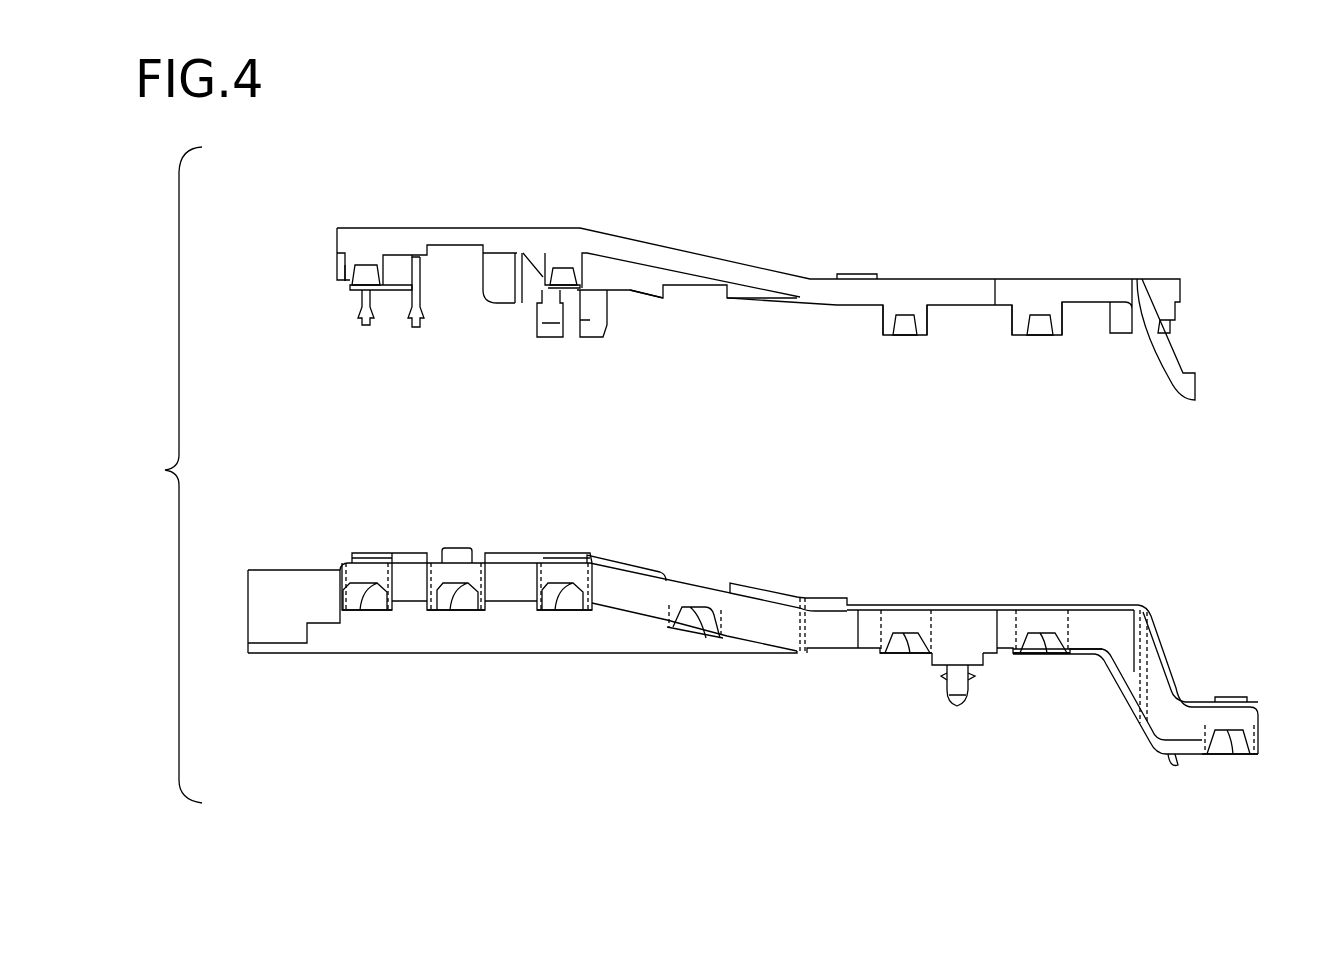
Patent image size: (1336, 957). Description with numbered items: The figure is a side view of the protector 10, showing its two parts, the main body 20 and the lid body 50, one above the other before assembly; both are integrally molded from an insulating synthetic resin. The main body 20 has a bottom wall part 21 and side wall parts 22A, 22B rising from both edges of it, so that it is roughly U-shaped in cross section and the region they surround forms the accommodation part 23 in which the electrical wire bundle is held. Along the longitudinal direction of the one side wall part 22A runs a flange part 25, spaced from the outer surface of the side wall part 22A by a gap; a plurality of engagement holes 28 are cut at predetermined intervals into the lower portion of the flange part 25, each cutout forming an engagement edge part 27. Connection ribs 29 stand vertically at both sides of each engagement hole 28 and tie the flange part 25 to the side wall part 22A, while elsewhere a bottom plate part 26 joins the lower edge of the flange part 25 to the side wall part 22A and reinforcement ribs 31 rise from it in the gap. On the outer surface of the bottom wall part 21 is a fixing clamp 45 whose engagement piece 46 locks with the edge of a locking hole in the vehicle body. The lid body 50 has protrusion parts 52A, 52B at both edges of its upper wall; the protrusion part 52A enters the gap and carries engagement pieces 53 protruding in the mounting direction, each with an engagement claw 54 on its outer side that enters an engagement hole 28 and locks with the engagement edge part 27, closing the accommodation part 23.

The protector 10 is at (1140, 195).
The main body 20 is at (773, 660).
The bottom wall part 21 is at (697, 657).
The side wall part 22A is at (595, 638).
The side wall part 22B is at (522, 552).
The accommodation part 23 is at (752, 608).
The flange part 25 is at (683, 575).
The bottom plate part 26 is at (510, 604).
The engagement edge part 27 is at (370, 612).
The engagement hole 28 is at (350, 605).
The connection rib 29 is at (392, 565).
The reinforcement rib 31 is at (802, 618).
The fixing clamp 45 is at (953, 718).
The engagement piece 46 is at (945, 678).
The lid body 50 is at (728, 248).
The protrusion part 52A is at (815, 298).
The protrusion part 52B is at (637, 292).
The engagement piece 53 is at (336, 270).
The engagement claw 54 is at (372, 264).